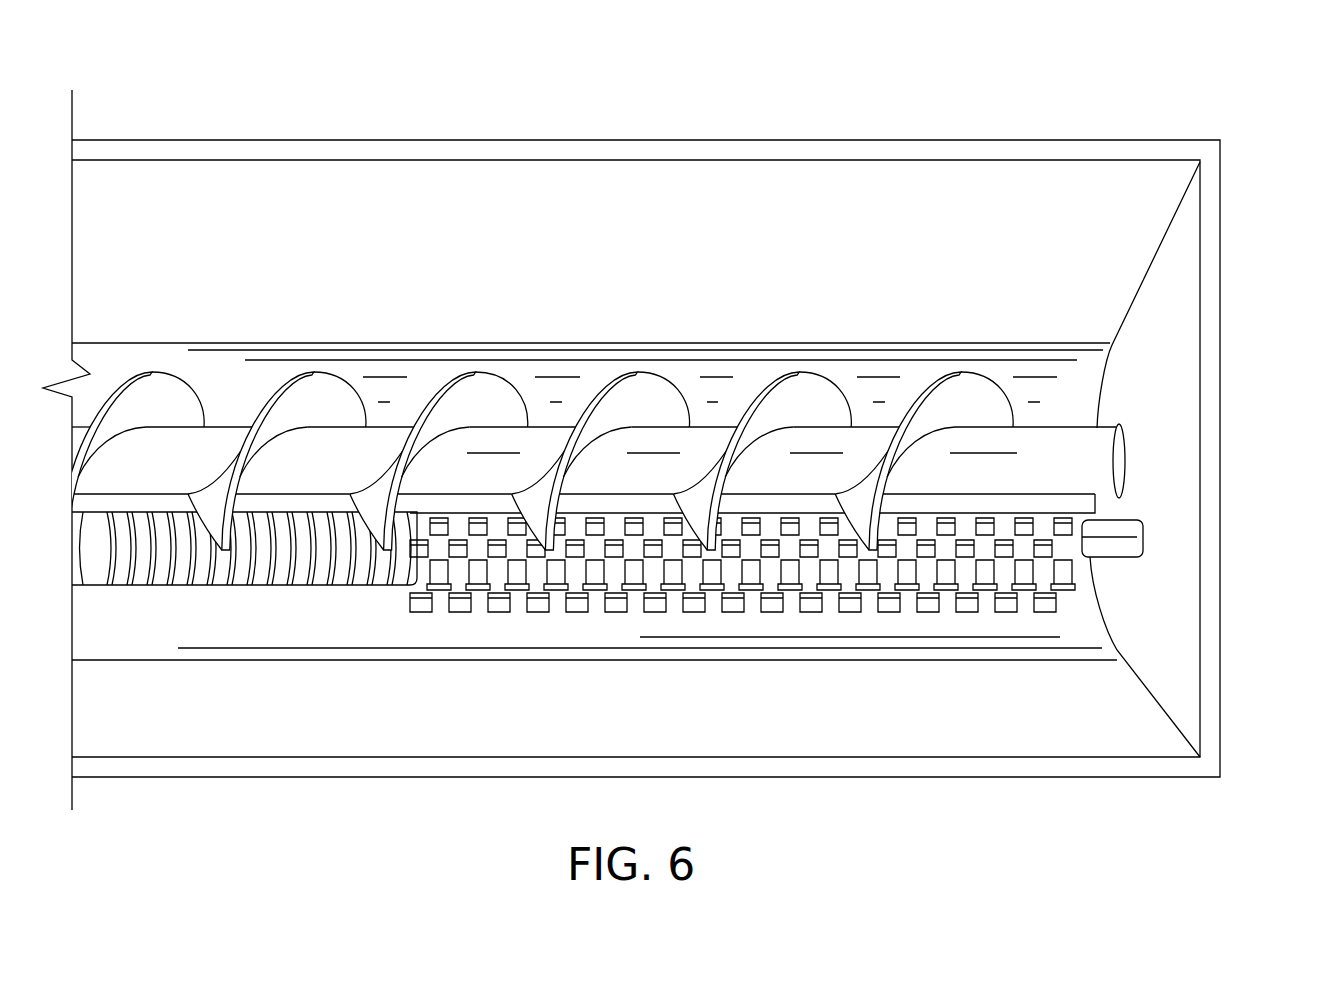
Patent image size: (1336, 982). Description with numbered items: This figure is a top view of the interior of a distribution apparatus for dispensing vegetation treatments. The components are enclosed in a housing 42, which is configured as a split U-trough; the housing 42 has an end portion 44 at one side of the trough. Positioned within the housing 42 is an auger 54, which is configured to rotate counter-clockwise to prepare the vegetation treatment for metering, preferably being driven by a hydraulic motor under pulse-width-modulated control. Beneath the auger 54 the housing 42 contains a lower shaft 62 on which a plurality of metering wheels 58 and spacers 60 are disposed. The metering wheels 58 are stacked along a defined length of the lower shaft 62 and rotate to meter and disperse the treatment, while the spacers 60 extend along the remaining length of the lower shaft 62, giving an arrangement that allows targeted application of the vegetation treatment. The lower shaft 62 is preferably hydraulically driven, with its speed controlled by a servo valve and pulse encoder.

The housing 42 is at (877, 140).
The housing end wall 44 is at (1173, 377).
The auger 54 is at (796, 388).
The metering wheels 58 is at (1040, 613).
The spacers 60 is at (273, 587).
The lower shaft 62 is at (1133, 547).